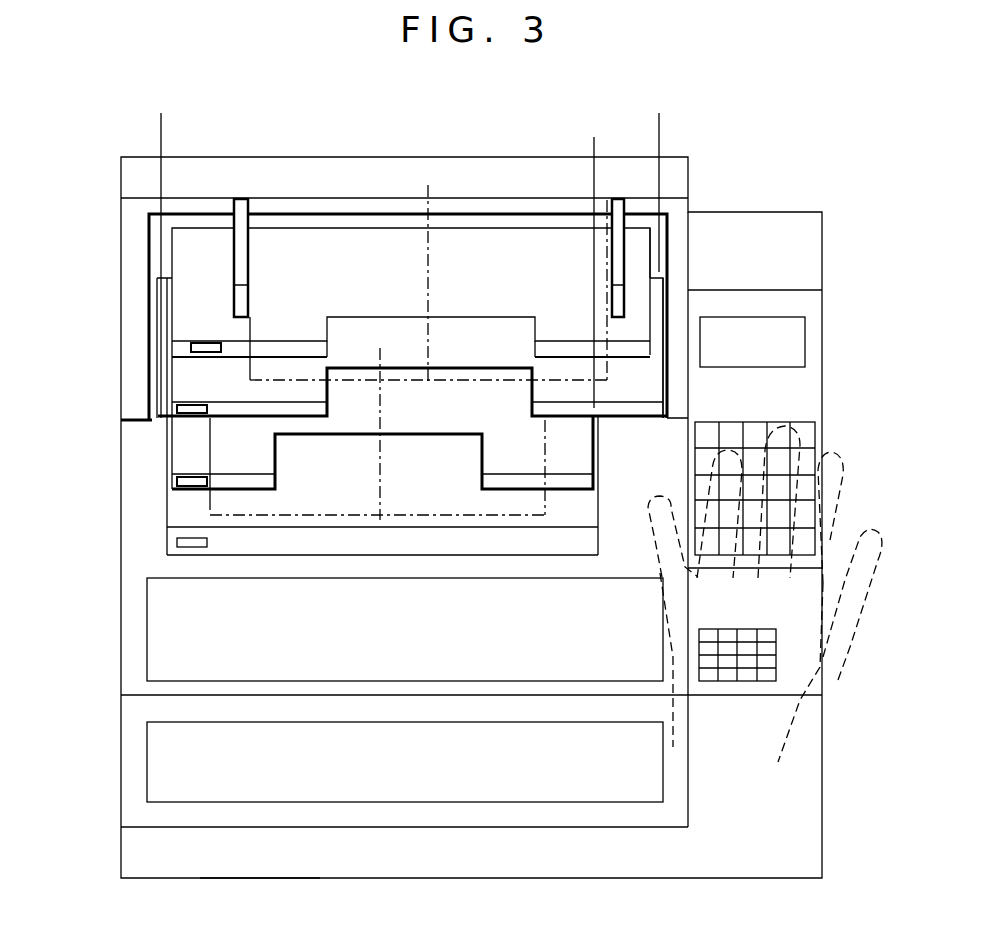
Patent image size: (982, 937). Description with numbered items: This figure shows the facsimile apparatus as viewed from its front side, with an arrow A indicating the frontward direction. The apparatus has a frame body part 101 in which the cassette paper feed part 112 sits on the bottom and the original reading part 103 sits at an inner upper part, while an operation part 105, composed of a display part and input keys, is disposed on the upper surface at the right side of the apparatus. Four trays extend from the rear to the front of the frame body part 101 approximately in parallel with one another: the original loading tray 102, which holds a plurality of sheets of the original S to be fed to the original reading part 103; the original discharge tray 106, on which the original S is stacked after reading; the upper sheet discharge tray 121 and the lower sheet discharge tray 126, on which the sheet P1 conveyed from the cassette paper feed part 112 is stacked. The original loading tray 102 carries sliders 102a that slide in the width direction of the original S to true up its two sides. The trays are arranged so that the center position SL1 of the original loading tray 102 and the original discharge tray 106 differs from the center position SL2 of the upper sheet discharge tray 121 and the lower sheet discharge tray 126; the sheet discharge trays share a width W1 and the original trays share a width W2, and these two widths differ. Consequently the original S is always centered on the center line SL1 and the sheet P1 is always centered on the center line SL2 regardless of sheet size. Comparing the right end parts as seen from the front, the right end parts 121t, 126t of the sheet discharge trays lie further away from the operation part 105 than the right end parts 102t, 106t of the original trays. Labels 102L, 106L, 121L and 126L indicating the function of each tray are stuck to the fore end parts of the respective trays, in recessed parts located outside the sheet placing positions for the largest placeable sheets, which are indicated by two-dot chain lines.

The frame body part 101 is at (121, 706).
The original loading tray 102 is at (183, 303).
The sliders 102a is at (240, 200).
The label 102L is at (190, 347).
The right end part of original loading tray 102t is at (652, 250).
The original reading part 103 is at (483, 177).
The operation part 105 is at (792, 406).
The original discharge tray 106 is at (173, 378).
The label 106L is at (177, 409).
The right end part of original discharge tray 106t is at (668, 330).
The cassette paper feed part 112 is at (258, 866).
The upper sheet discharge tray 121 is at (193, 440).
The label 121L is at (172, 488).
The right end part of upper sheet discharge tray 121t is at (598, 450).
The lower sheet discharge tray 126 is at (180, 515).
The label 126L is at (176, 548).
The right end part of lower sheet discharge tray 126t is at (598, 517).
The sheet P1 is at (210, 497).
The original S is at (248, 363).
The center position SL1 is at (428, 186).
The center position SL2 is at (380, 537).
The width W1 is at (594, 147).
The width W2 is at (659, 123).
The arrow A is at (427, 888).